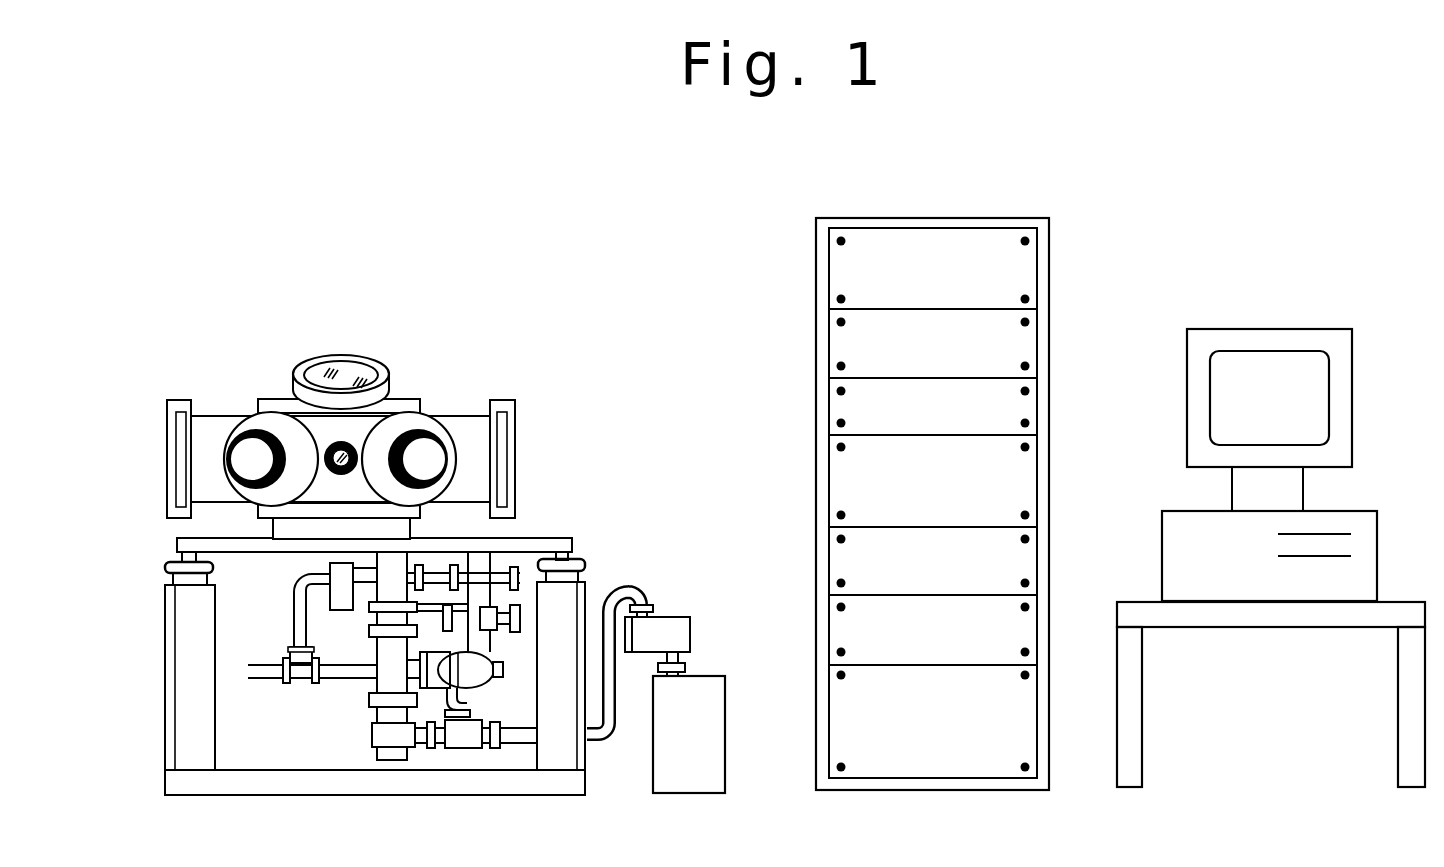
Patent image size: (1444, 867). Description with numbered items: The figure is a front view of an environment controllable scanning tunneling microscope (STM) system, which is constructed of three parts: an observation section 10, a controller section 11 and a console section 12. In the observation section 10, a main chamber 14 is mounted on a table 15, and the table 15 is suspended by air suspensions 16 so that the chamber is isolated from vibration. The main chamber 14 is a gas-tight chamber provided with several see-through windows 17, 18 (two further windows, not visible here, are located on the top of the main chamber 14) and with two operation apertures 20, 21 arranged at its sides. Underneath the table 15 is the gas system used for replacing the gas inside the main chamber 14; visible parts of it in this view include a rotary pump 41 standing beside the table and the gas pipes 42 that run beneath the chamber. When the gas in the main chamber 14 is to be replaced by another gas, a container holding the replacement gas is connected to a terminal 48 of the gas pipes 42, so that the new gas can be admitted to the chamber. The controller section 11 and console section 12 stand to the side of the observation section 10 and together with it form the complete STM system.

The observation section 10 is at (516, 312).
The controller section 11 is at (943, 226).
The console section 12 is at (1262, 342).
The main chamber 14 is at (278, 408).
The table 15 is at (538, 539).
The air suspensions 16 is at (172, 571).
The see-through window 17 is at (344, 368).
The see-through window 18 is at (350, 445).
The operation aperture 20 is at (252, 458).
The operation aperture 21 is at (430, 455).
The rotary pump 41 is at (692, 688).
The gas pipes 42 is at (350, 672).
The terminal 48 is at (248, 672).